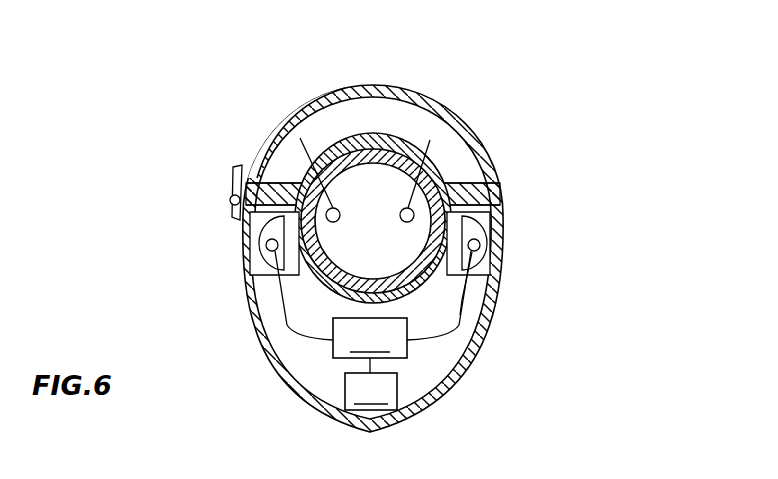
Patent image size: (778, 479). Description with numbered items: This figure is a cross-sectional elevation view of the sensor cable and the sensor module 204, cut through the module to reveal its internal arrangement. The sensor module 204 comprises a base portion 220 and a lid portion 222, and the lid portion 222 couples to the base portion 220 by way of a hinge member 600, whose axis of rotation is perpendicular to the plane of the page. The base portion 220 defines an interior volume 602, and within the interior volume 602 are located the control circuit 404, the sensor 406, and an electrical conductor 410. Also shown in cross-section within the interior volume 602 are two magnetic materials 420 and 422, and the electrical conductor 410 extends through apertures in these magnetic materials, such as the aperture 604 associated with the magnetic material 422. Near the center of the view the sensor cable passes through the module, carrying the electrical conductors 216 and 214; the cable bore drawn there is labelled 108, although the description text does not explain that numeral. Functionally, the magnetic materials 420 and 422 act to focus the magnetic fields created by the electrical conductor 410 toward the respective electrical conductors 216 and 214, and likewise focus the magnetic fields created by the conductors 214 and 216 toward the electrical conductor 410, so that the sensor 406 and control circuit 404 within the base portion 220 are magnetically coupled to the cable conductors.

The sensor module 204 is at (300, 93).
The electrical conductor 216 is at (318, 152).
The lid portion 222 is at (262, 145).
The hinge member 600 is at (232, 195).
The magnetic material 420 is at (240, 228).
The electrical conductor 410 is at (283, 318).
The base portion 220 is at (283, 380).
The shaft bore 108 is at (423, 145).
The electrical conductor 214 is at (445, 177).
The magnetic material 422 is at (478, 224).
The aperture 604 is at (480, 246).
The interior volume 602 is at (470, 292).
The control circuit 404 is at (370, 338).
The sensor 406 is at (371, 384).